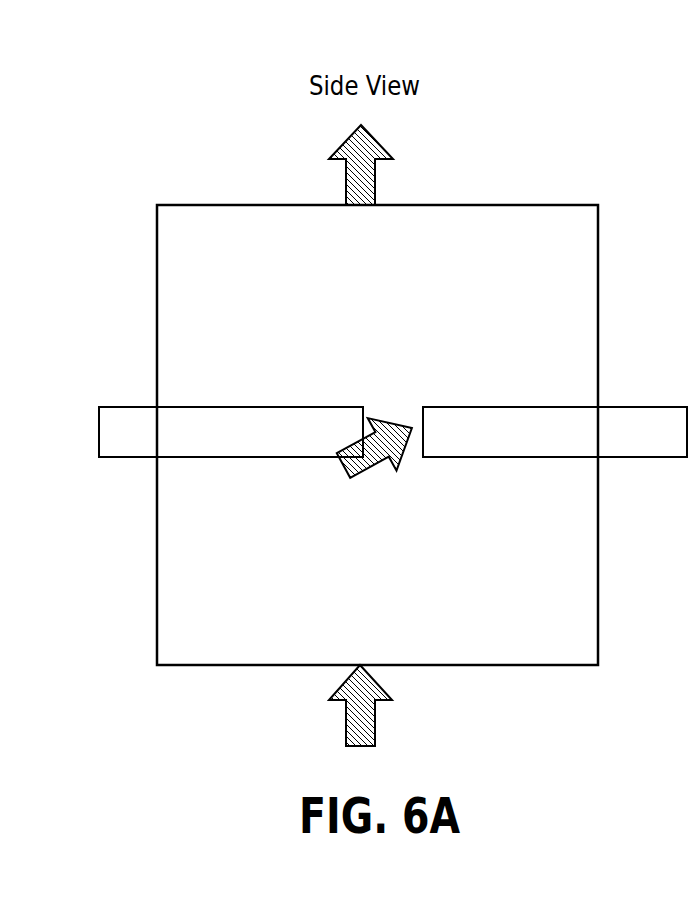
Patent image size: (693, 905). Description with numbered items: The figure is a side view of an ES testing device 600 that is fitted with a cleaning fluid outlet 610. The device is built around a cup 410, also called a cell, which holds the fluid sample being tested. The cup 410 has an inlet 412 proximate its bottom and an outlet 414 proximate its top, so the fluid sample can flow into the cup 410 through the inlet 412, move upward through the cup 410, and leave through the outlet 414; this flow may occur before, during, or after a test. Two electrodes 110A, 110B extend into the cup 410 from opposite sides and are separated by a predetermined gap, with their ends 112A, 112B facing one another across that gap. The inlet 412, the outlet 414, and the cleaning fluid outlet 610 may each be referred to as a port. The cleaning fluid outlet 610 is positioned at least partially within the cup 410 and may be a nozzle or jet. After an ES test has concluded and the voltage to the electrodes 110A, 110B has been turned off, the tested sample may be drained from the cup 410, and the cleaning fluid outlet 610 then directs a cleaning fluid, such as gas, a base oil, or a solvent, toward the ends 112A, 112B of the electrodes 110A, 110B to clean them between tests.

The ES testing device 600 is at (212, 80).
The cup 410 is at (157, 262).
The outlet 414 is at (346, 186).
The inlet 412 is at (346, 730).
The electrode 110A is at (123, 407).
The electrode 110B is at (638, 407).
The end of electrode 112A is at (365, 410).
The end of electrode 112B is at (423, 418).
The cleaning fluid outlet 610 is at (370, 472).